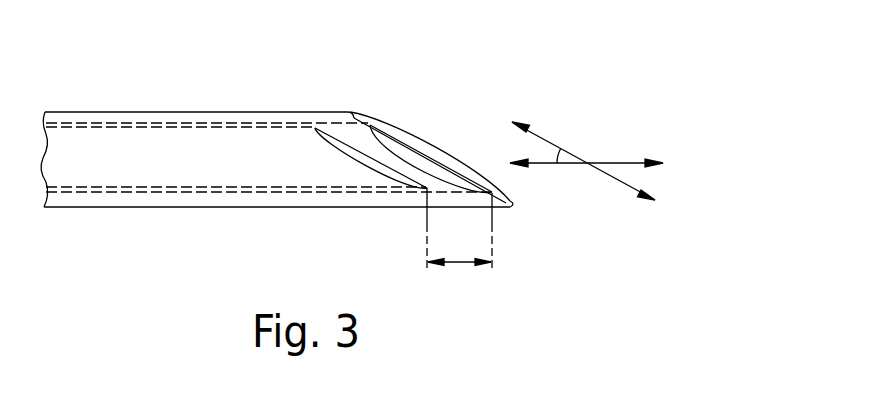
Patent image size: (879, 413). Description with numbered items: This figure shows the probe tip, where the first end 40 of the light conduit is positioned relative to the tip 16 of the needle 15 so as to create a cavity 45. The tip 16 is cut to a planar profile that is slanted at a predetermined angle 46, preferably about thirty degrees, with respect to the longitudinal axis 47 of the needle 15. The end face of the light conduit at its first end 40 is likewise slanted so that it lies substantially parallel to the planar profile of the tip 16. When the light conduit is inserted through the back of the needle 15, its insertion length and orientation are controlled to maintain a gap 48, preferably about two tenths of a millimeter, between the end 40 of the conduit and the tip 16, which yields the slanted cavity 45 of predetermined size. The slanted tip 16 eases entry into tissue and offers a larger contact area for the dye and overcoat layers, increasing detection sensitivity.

The needle 15 is at (145, 208).
The tip 16 is at (510, 208).
The first end of light conduit 40 is at (208, 153).
The cavity 45 is at (408, 141).
The predetermined angle 46 is at (555, 160).
The longitudinal axis 47 is at (625, 162).
The gap 48 is at (457, 263).